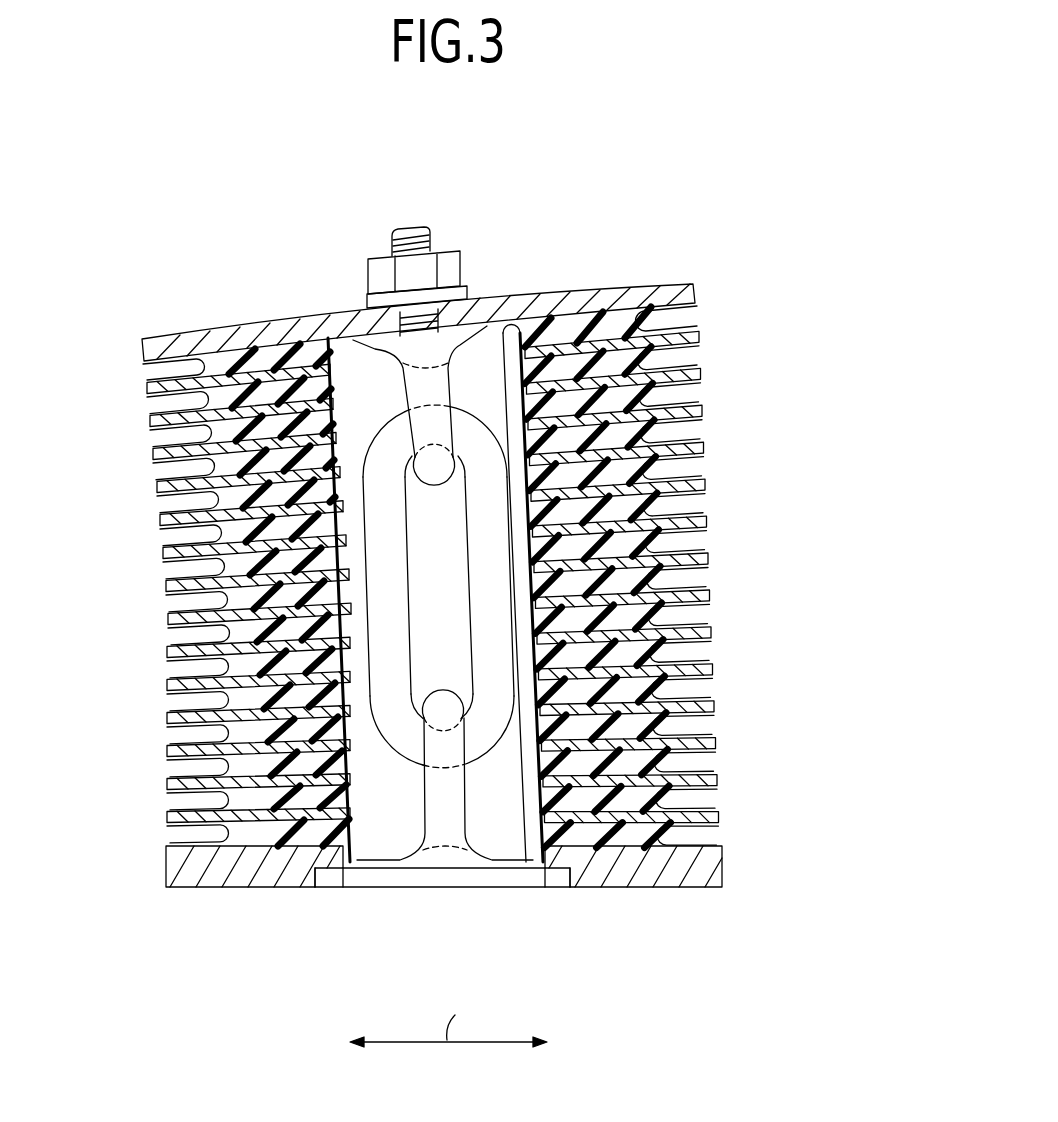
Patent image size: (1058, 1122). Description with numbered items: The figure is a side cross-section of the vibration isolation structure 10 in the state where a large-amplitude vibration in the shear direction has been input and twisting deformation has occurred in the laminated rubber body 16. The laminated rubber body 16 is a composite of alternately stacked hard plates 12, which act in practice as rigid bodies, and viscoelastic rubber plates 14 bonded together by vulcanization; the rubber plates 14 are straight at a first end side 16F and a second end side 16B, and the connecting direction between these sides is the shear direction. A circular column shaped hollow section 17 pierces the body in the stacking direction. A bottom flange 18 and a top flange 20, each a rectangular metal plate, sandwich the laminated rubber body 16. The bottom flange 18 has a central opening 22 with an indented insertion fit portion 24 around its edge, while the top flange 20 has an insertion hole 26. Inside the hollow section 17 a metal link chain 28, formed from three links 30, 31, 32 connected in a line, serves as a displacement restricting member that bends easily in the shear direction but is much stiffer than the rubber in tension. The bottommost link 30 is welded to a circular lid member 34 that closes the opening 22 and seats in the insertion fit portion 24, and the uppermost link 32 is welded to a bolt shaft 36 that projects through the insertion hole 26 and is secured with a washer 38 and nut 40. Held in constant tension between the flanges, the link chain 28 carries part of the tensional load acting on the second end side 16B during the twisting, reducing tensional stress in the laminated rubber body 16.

The vibration isolation structure 10 is at (731, 216).
The hard plates 12 is at (703, 406).
The rubber plates 14 is at (230, 462).
The laminated rubber body 16 is at (768, 576).
The first end side 16F is at (205, 542).
The second end side 16B is at (650, 540).
The hollow section 17 is at (336, 374).
The flange 18 is at (712, 888).
The flange 20 is at (165, 338).
The opening 22 is at (521, 888).
The insertion fit portion 24 is at (333, 888).
The insertion hole 26 is at (416, 312).
The link chain 28 is at (480, 412).
The link 30 is at (424, 810).
The link 31 is at (498, 750).
The link 32 is at (438, 490).
The lid member 34 is at (436, 890).
The bolt shaft 36 is at (403, 229).
The washer 38 is at (468, 298).
The nut 40 is at (378, 257).